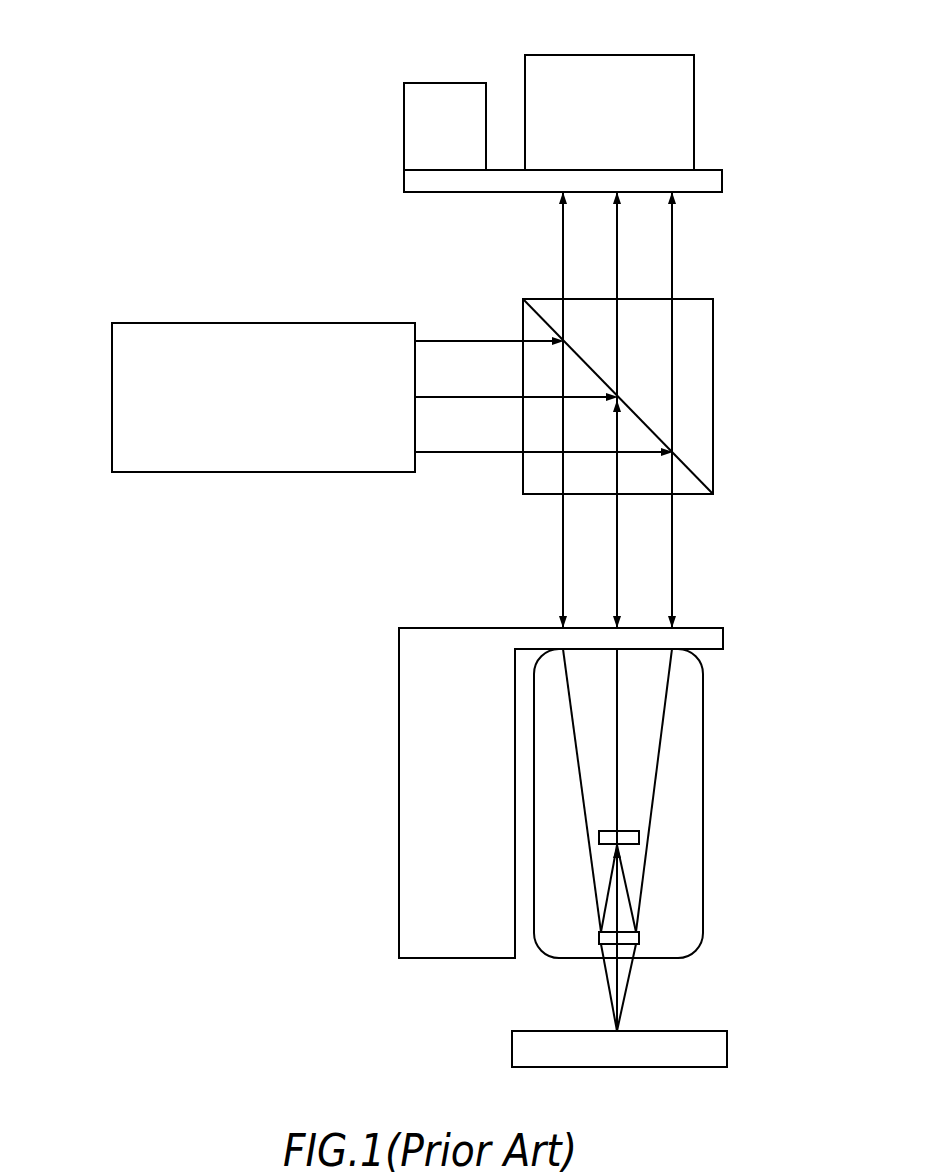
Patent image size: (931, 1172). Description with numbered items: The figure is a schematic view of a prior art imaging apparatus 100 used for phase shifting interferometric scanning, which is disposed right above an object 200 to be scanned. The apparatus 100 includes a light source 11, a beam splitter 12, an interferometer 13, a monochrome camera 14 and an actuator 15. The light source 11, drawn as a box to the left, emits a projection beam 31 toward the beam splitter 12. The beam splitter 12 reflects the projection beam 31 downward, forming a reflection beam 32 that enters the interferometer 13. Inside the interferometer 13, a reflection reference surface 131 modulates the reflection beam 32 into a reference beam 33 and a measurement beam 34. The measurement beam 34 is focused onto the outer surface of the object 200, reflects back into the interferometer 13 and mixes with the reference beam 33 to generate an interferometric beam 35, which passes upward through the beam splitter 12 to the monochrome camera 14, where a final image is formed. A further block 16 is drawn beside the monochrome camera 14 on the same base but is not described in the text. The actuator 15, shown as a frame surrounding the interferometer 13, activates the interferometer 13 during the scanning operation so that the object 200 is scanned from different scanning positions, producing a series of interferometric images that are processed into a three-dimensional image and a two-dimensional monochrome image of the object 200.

The prior art imaging apparatus 100 is at (203, 108).
The light source 11 is at (122, 389).
The beam splitter 12 is at (704, 346).
The interferometer 13 is at (693, 758).
The reflection reference surface 131 is at (608, 938).
The monochrome camera 14 is at (684, 114).
The actuator 15 is at (412, 740).
The circuit element 16 is at (415, 128).
The projection beam 31 is at (458, 455).
The reflection beam 32 is at (563, 565).
The reference beam 33 is at (630, 880).
The measurement beam 34 is at (632, 990).
The interferometric beam 35 is at (672, 243).
The object 200 is at (716, 1050).